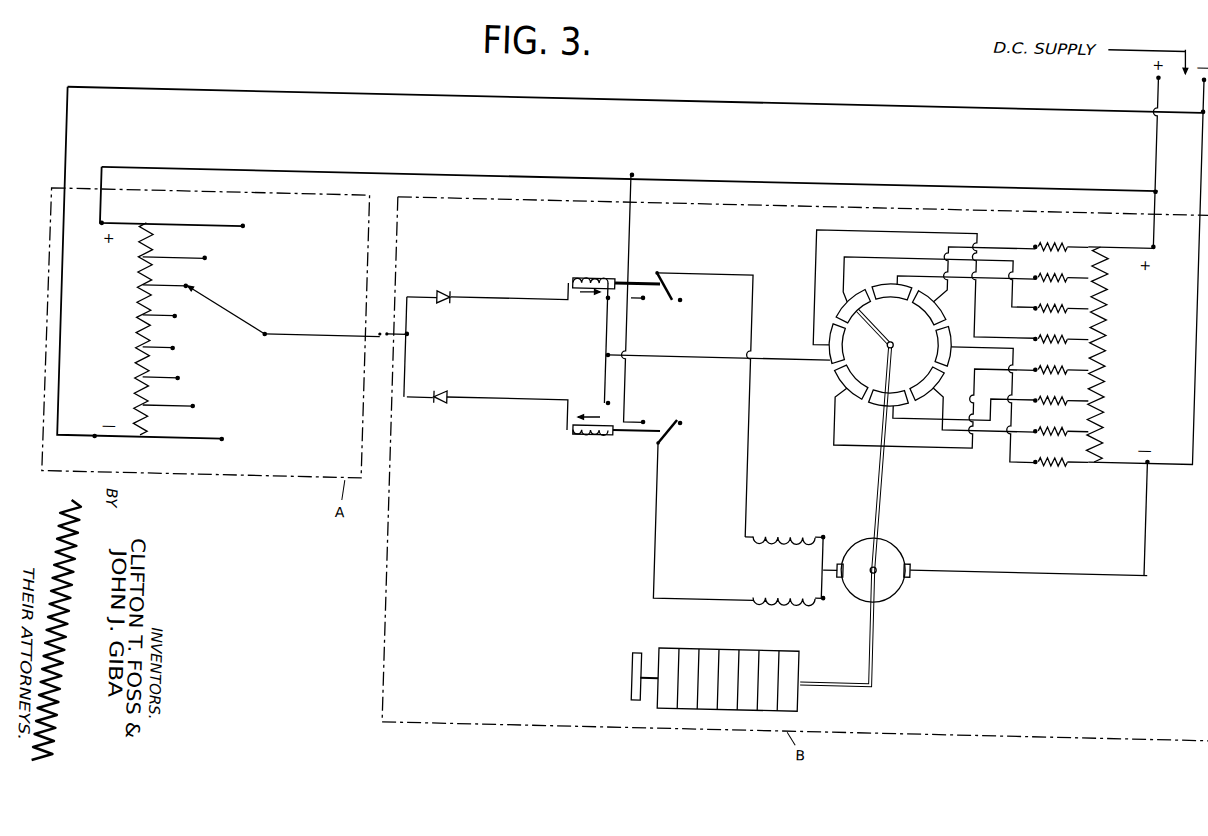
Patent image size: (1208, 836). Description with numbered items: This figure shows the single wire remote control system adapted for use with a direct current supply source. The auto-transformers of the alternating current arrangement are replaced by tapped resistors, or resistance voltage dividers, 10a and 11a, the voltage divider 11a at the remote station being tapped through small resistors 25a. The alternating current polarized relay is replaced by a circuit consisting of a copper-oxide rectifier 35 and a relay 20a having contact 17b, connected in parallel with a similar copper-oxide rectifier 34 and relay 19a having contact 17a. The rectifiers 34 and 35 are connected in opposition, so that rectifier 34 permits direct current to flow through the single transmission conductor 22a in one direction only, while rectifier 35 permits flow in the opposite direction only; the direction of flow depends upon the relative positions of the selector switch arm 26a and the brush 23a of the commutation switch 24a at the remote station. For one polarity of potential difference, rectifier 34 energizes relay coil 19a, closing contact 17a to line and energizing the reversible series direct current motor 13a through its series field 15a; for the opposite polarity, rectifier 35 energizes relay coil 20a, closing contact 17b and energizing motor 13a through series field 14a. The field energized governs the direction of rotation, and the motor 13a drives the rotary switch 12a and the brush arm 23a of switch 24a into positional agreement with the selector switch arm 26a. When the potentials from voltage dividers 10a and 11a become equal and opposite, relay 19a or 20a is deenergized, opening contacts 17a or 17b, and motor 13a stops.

The tapped resistor 10a is at (132, 324).
The selector switch arm 26a is at (229, 318).
The single transmission conductor 22a is at (305, 339).
The copper-oxide rectifier 35 is at (442, 289).
The copper-oxide rectifier 34 is at (443, 412).
The relay 20a is at (589, 273).
The relay 19a is at (588, 440).
The contact 17b is at (677, 286).
The contact 17a is at (674, 436).
The brush 23a is at (872, 306).
The commutation switch 24a is at (834, 380).
The tap resistor 25a is at (1057, 227).
The tapped resistor 11a is at (1108, 303).
The series field winding 14a is at (787, 529).
The series field winding 15a is at (778, 589).
The reversible series direct current motor 13a is at (902, 541).
The rotary switch 12a is at (807, 696).